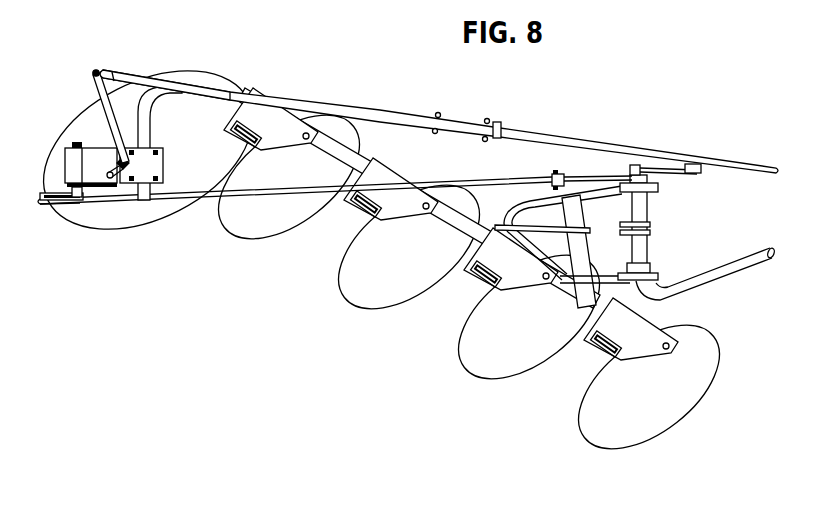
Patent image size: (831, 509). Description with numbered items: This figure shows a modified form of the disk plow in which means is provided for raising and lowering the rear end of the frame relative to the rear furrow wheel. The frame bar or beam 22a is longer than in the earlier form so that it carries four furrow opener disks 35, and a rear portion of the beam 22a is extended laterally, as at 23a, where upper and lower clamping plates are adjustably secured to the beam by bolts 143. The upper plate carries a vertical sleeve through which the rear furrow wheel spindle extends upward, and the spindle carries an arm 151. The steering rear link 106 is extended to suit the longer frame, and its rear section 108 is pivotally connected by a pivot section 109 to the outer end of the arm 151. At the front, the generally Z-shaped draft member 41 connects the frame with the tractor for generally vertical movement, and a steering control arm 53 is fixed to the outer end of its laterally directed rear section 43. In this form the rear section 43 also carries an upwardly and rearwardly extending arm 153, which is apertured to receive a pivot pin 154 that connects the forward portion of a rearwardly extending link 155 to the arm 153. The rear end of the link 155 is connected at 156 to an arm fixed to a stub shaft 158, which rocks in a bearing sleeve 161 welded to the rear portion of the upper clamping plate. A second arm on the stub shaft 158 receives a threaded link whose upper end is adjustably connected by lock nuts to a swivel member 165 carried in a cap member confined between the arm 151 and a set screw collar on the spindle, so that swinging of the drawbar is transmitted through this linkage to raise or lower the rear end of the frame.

The frame bar or beam 22a is at (225, 72).
The laterally extended rear portion 23a is at (150, 130).
The furrow opener disks 35 is at (367, 243).
The Z-shaped draft member 41 is at (723, 258).
The rear section of draft member 43 is at (641, 255).
The steering control arm 53 is at (667, 178).
The rear link 106 is at (374, 102).
The rear section of rear link 108 is at (145, 77).
The pivot section 109 is at (93, 71).
The bolts 143 is at (164, 155).
The arm 151 is at (103, 102).
The upwardly and rearwardly extending arm 153 is at (603, 176).
The pivot pin 154 is at (556, 174).
The rearwardly extending link 155 is at (424, 184).
The rear end connection of link 156 is at (43, 207).
The stub shaft 158 is at (67, 194).
The bearing sleeve 161 is at (68, 154).
The swivel member 165 is at (108, 172).